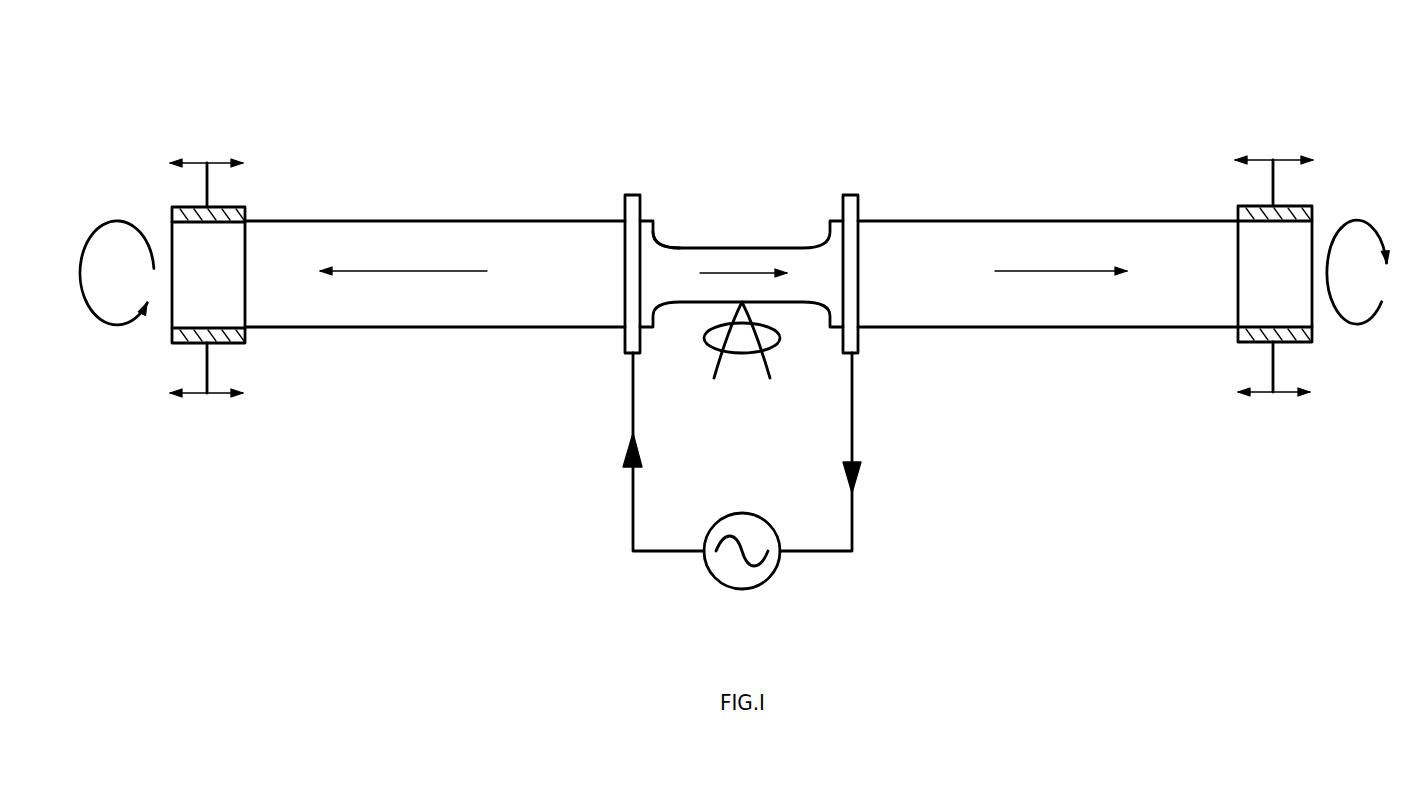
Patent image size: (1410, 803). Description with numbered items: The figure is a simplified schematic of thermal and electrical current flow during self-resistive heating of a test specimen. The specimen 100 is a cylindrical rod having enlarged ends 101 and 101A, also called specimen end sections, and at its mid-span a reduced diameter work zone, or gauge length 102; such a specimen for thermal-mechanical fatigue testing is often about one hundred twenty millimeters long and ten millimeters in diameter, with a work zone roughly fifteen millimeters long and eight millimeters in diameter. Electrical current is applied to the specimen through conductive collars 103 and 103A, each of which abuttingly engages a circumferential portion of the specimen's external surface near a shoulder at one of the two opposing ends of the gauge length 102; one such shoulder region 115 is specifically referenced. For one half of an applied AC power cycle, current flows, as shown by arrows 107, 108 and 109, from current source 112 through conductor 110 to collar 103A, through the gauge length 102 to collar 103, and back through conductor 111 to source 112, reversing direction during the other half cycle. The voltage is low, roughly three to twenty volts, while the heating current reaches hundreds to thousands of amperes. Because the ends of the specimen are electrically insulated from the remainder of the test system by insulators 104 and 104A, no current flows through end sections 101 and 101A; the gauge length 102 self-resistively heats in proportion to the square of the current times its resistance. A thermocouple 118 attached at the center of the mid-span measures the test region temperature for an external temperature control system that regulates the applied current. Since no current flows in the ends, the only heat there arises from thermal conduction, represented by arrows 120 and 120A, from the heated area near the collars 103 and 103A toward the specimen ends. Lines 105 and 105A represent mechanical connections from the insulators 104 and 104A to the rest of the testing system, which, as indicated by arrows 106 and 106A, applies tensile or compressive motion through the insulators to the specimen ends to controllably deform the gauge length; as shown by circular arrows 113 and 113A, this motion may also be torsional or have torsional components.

The specimen 100 is at (744, 338).
The enlarged end 101 is at (1048, 231).
The enlarged end 101A is at (435, 242).
The gauge length 102 is at (741, 256).
The conductive collar 103 is at (904, 305).
The conductive collar 103A is at (570, 310).
The insulator 104 is at (1323, 284).
The insulator 104A is at (272, 285).
The mechanical connection line 105 is at (1325, 276).
The mechanical connection line 105A is at (281, 279).
The mechanical motion arrow 106 is at (1273, 395).
The mechanical motion arrow 106A is at (207, 163).
The current path arrow 107 is at (630, 472).
The current path arrow 108 is at (742, 201).
The current path arrow 109 is at (855, 455).
The conductor 110 is at (623, 466).
The conductor 111 is at (861, 461).
The current source 112 is at (769, 573).
The circular arrow 113 is at (1359, 272).
The circular arrow 113A is at (117, 287).
The shoulder region 115 is at (646, 182).
The thermocouple 118 is at (768, 345).
The thermal conduction arrow 120 is at (1064, 327).
The thermal conduction arrow 120A is at (410, 317).